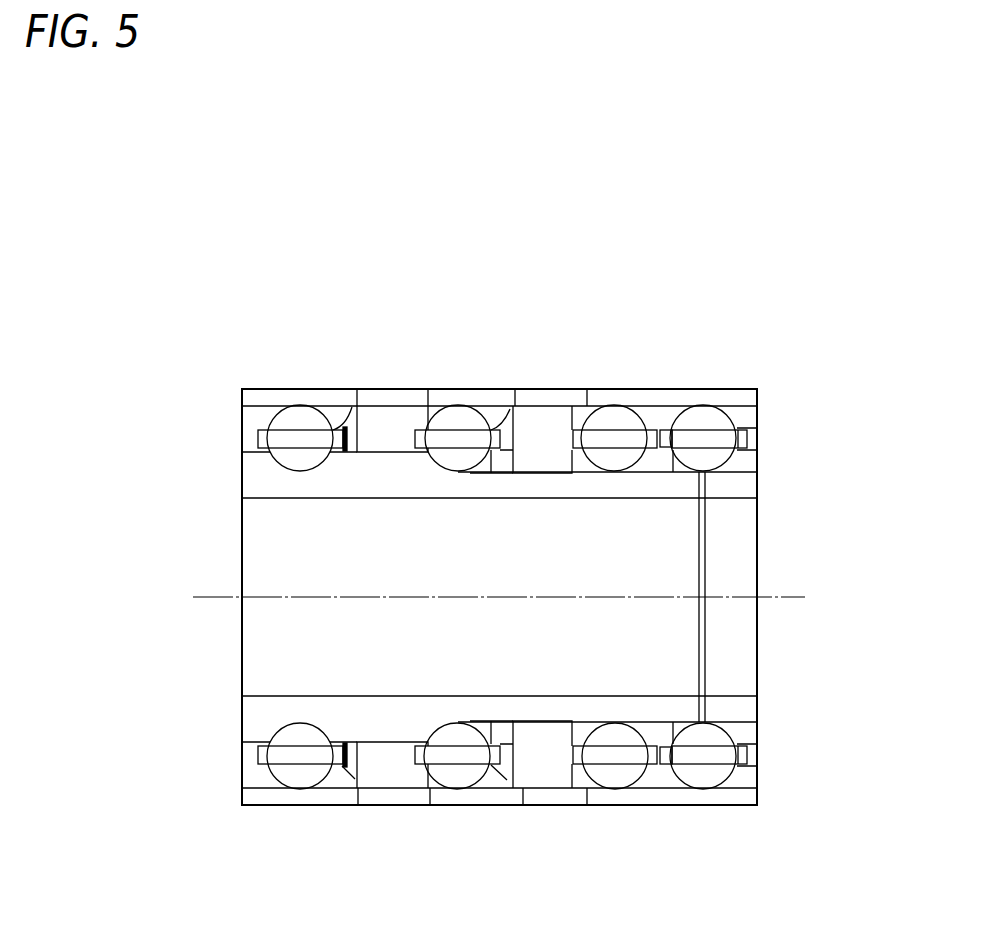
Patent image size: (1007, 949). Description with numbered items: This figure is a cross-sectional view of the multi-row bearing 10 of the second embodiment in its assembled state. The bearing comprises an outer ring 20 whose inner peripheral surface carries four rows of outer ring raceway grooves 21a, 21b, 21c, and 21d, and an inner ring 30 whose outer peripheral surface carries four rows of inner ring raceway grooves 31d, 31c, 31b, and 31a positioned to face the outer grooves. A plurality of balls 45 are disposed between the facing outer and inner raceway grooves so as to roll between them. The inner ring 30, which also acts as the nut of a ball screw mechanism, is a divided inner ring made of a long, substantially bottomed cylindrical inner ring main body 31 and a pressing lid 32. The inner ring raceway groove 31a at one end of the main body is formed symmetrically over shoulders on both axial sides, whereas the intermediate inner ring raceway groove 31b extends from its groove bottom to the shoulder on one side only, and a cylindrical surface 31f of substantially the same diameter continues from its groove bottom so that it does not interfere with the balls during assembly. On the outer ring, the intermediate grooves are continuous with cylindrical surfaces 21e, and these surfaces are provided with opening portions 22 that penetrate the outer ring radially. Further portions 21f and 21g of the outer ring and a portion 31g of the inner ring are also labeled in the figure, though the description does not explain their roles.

The multi-row bearing 10 is at (523, 517).
The outer ring 20 is at (735, 387).
The outer ring raceway groove 21a is at (692, 410).
The outer ring raceway groove 21b is at (615, 418).
The outer ring raceway groove 21c is at (462, 418).
The outer ring raceway groove 21d is at (296, 421).
The cylindrical surface 21e is at (598, 413).
The ball 21f is at (458, 412).
The ball 21g is at (257, 410).
The opening portion 22 is at (367, 398).
The inner ring 30 is at (558, 591).
The inner ring main body 31 is at (822, 460).
The pressing lid 32 is at (740, 480).
The inner ring raceway groove 31a is at (297, 732).
The inner ring raceway groove 31b is at (452, 732).
The inner ring raceway groove 31c is at (613, 732).
The inner ring raceway groove 31d is at (709, 732).
The cylindrical surface 31f is at (530, 725).
The ball 31g is at (654, 728).
The ball 45 is at (288, 413).